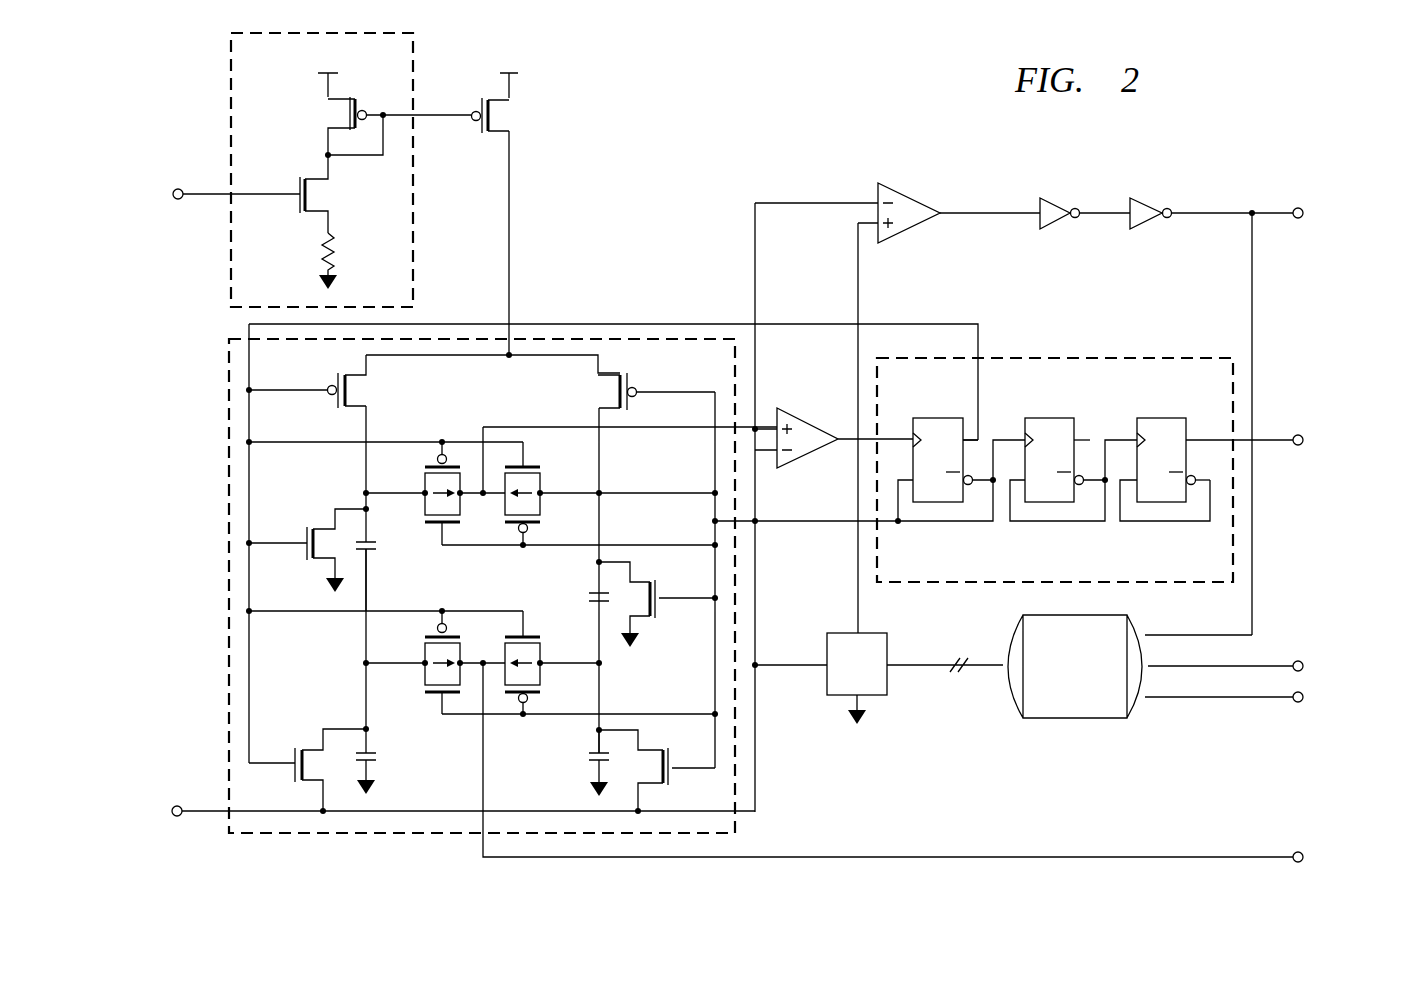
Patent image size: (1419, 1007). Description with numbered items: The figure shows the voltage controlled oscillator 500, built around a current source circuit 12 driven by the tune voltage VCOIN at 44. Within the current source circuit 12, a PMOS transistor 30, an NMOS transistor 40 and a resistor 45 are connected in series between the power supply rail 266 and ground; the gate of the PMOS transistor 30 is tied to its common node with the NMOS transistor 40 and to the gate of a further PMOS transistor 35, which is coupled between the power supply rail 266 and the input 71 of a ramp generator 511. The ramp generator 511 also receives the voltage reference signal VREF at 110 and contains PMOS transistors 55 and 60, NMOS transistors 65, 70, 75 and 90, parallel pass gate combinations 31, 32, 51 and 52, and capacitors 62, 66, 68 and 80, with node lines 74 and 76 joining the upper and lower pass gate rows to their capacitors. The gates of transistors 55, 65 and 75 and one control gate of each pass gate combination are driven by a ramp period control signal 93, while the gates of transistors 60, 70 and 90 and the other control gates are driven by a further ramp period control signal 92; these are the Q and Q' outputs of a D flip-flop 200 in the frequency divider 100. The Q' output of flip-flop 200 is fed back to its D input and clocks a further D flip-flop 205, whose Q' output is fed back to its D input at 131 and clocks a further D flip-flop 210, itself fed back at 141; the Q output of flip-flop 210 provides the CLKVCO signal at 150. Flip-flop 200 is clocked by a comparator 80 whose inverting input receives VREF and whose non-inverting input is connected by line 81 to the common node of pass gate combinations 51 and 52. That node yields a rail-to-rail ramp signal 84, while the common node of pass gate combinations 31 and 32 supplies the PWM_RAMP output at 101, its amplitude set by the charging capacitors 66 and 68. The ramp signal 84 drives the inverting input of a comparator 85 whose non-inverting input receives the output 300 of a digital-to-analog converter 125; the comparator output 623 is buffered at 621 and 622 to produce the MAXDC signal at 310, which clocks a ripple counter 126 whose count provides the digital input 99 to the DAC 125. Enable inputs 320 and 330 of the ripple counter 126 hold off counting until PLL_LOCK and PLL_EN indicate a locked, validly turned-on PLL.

The current source circuit 12 is at (231, 93).
The power supply rail 266 is at (328, 75).
The PMOS transistor 30 is at (352, 100).
The further PMOS transistor 35 is at (481, 100).
The NMOS transistor 40 is at (298, 205).
The tune voltage VCOIN input 44 is at (201, 193).
The resistor 45 is at (322, 250).
The input of ramp generator 71 is at (511, 210).
The VCO 500 is at (725, 131).
The ramp generator 511 is at (229, 553).
The ramp period control signal 93 is at (797, 323).
The ramp signal 84 is at (797, 202).
The comparator 85 is at (905, 188).
The output of DAC 300 is at (860, 297).
The output of comparator 623 is at (985, 212).
The buffer 622 is at (1055, 200).
The buffer 621 is at (1145, 200).
The MAXDC signal output 310 is at (1215, 212).
The frequency divider 100 is at (1053, 357).
The D flip-flop 200 is at (940, 417).
The further D flip-flop 205 is at (1052, 417).
The further D flip-flop 210 is at (1163, 417).
The D input feedback of flip-flop 205 131 is at (1050, 523).
The D input feedback of flip-flop 210 141 is at (1160, 523).
The CLKVCO signal output 150 is at (1272, 439).
The comparator 80 is at (805, 414).
The further ramp period control signal 92 is at (797, 523).
The line 81 is at (602, 452).
The PMOS transistor 55 is at (330, 385).
The PMOS transistor 60 is at (634, 380).
The node line 74 is at (365, 468).
The parallel pass gate combination 51 is at (423, 485).
The parallel pass gate combination 52 is at (543, 480).
The NMOS transistor 65 is at (305, 535).
The capacitor 62 is at (588, 596).
The NMOS transistor 70 is at (660, 612).
The node line 76 is at (365, 640).
The parallel pass gate combination 31 is at (423, 672).
The parallel pass gate combination 32 is at (543, 652).
The NMOS transistor 75 is at (293, 775).
The charging capacitor 66 is at (378, 756).
The charging capacitor 68 is at (588, 758).
The NMOS transistor 90 is at (670, 780).
The voltage reference signal VREF input 110 is at (201, 808).
The PWM_RAMP output 101 is at (1210, 855).
The digital-to-analog converter 125 is at (890, 680).
The digital input to DAC 99 is at (918, 664).
The ripple counter 126 is at (1075, 720).
The enable input 320 is at (1270, 665).
The enable input 330 is at (1210, 699).